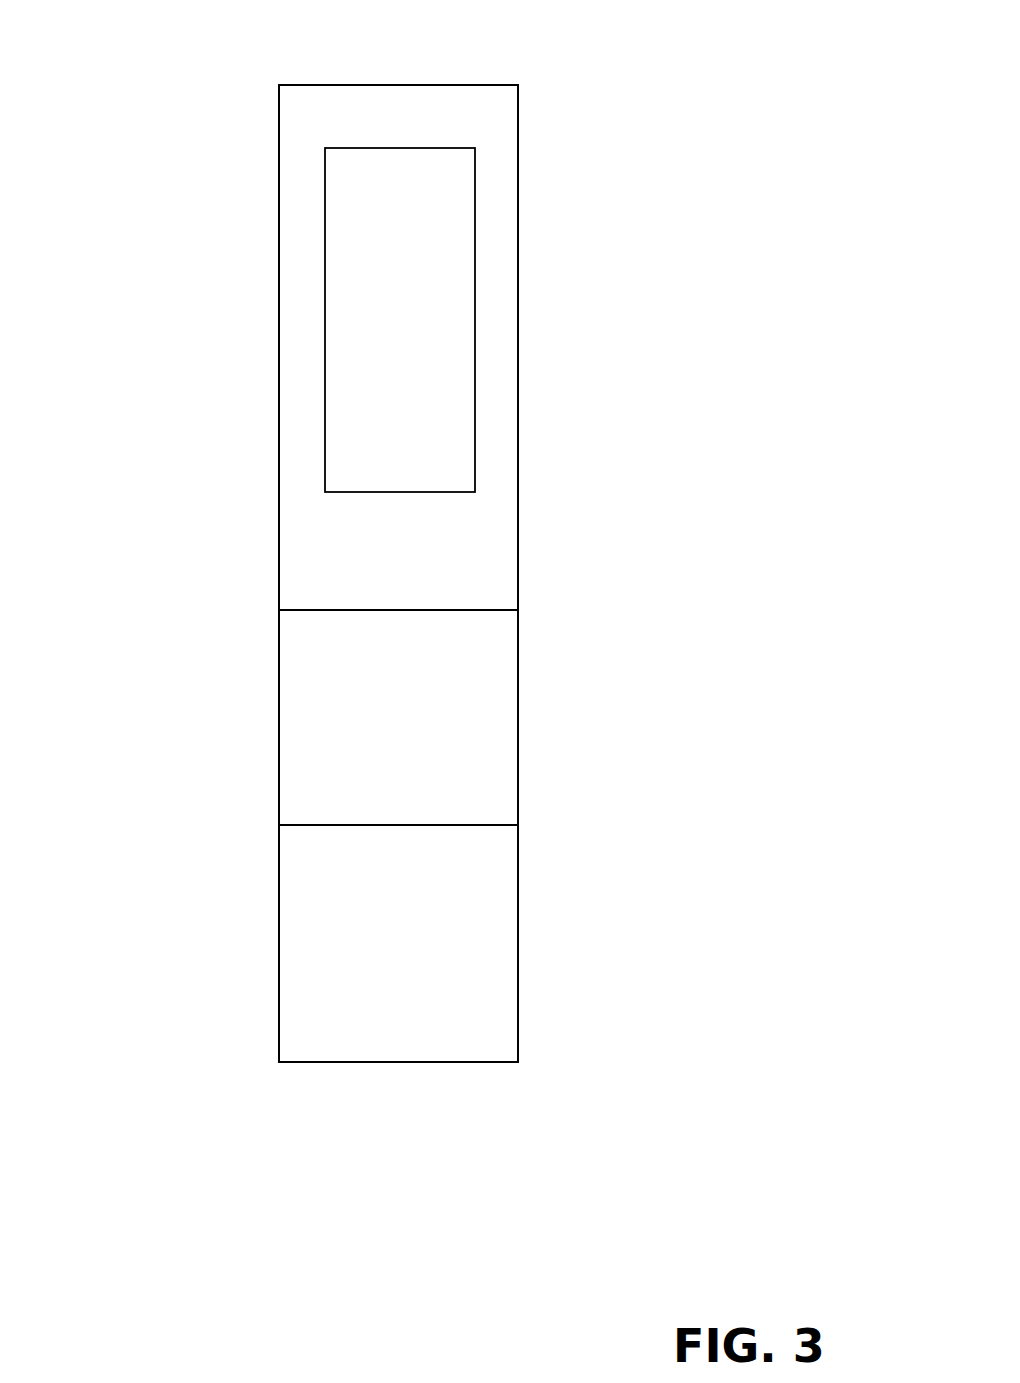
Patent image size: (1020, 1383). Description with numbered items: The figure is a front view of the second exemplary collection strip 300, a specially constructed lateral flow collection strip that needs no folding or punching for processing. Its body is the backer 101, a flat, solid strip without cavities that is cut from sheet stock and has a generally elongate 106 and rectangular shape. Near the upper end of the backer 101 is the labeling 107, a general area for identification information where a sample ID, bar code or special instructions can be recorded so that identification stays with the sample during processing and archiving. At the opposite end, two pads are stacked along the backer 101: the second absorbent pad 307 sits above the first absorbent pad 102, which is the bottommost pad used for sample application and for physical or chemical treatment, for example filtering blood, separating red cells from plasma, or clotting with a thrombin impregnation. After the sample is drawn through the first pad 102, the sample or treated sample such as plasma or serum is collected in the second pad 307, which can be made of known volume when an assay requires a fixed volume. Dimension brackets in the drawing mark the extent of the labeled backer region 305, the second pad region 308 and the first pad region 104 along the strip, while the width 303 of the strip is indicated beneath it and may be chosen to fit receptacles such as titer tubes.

The second exemplary collection strip 300 is at (398, 718).
The backer 101 is at (486, 563).
The labeling 107 is at (428, 222).
The second pad 307 is at (486, 737).
The first pad 102 is at (489, 938).
The elongate shape 106 is at (148, 1062).
The length of backer area 305 is at (252, 90).
The length of second absorbent pad 308 is at (252, 612).
The length of first absorbent pad 104 is at (252, 827).
The width 303 is at (519, 1089).